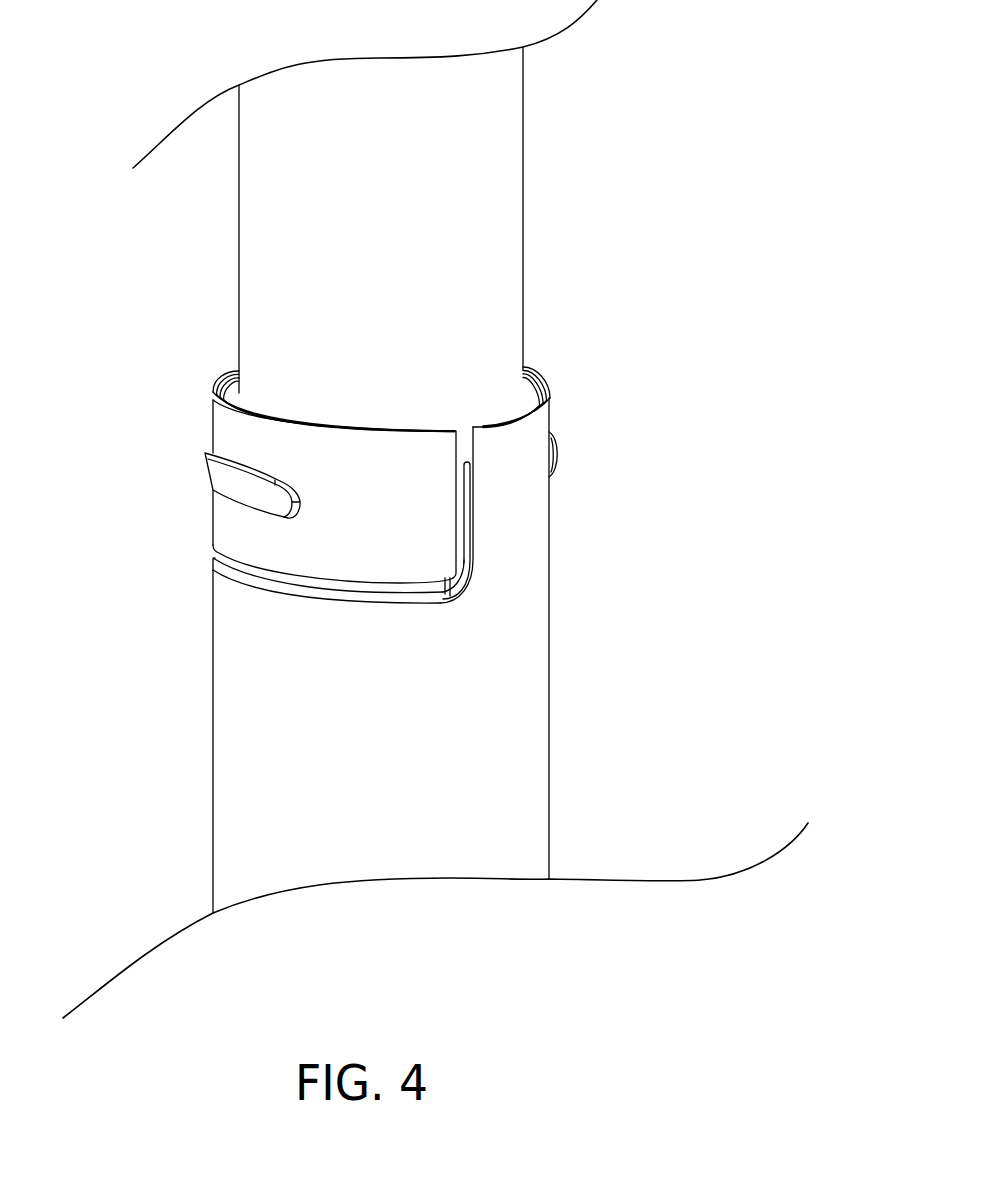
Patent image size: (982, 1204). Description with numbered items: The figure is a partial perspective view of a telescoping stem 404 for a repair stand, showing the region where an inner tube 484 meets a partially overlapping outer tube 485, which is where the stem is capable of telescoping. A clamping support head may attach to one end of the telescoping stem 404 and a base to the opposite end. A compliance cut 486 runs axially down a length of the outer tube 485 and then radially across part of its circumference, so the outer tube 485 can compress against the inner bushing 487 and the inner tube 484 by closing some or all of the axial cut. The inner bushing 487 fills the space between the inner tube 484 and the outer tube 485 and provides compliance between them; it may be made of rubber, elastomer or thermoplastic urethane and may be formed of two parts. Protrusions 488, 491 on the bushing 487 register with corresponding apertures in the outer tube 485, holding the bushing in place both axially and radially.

The telescoping stem 404 is at (561, 305).
The inner tube 484 is at (396, 222).
The outer tube 485 is at (404, 744).
The compliance cut 486 is at (462, 450).
The inner bushing 487 is at (230, 390).
The protrusion 488 is at (232, 485).
The protrusion 491 is at (558, 455).